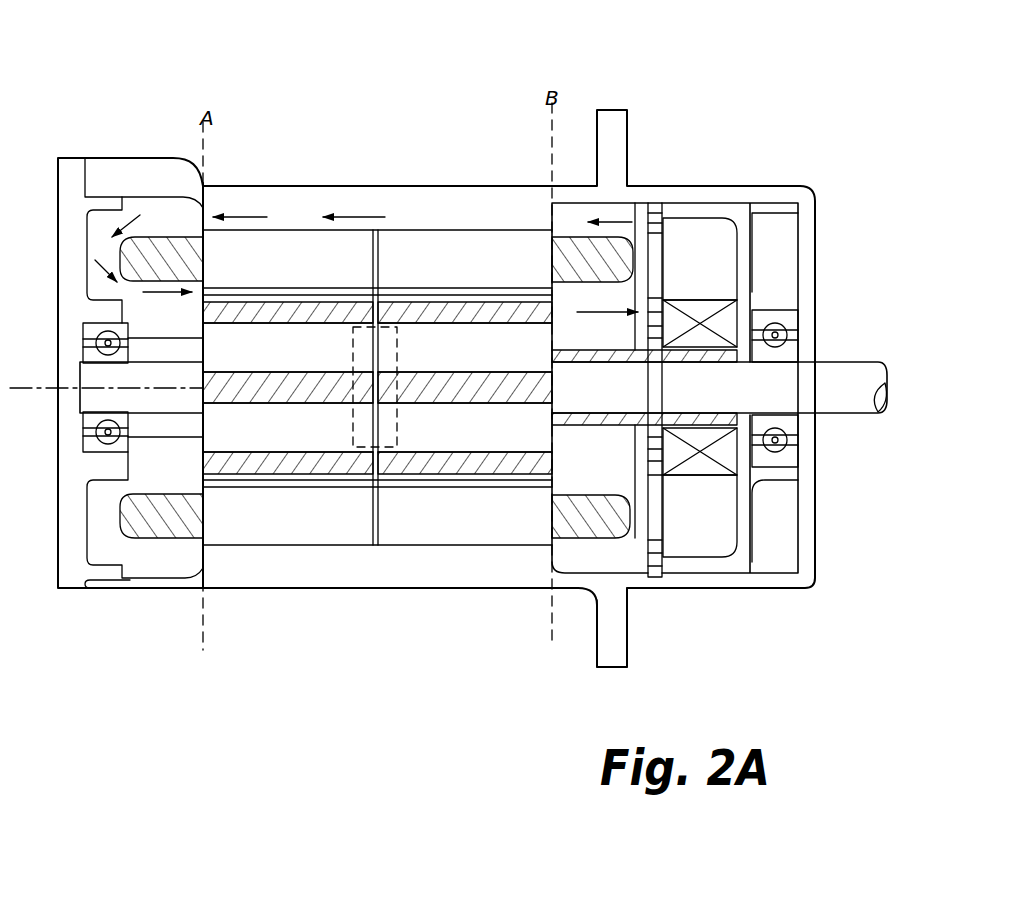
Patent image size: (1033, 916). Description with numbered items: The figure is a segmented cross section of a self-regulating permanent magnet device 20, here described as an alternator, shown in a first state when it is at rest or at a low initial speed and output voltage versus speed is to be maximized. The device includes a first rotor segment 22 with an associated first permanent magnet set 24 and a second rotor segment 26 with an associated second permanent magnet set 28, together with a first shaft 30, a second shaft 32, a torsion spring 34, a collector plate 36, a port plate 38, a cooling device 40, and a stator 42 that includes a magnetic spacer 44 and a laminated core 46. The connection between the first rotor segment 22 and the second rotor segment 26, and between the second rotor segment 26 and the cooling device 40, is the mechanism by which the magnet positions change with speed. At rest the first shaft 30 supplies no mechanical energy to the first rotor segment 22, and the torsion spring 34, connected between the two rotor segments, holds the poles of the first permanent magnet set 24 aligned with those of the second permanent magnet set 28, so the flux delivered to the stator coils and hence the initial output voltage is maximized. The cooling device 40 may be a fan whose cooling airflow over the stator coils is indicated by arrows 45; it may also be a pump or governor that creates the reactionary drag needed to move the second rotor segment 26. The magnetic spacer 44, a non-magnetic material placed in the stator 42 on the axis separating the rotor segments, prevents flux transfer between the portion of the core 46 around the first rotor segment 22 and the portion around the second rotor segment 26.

The self-regulating permanent magnet device 20 is at (112, 150).
The first rotor segment 22 is at (240, 356).
The first permanent magnet set 24 is at (258, 470).
The second rotor segment 26 is at (433, 370).
The second permanent magnet set 28 is at (498, 466).
The first shaft 30 is at (835, 397).
The second shaft 32 is at (612, 428).
The torsion spring 34 is at (356, 425).
The collector plate 36 is at (703, 253).
The port plate 38 is at (655, 201).
The cooling device 40 is at (697, 318).
The stator 42 is at (577, 583).
The magnetic spacer 44 is at (376, 230).
The cooling airflow arrows 45 is at (258, 303).
The laminated core 46 is at (608, 517).